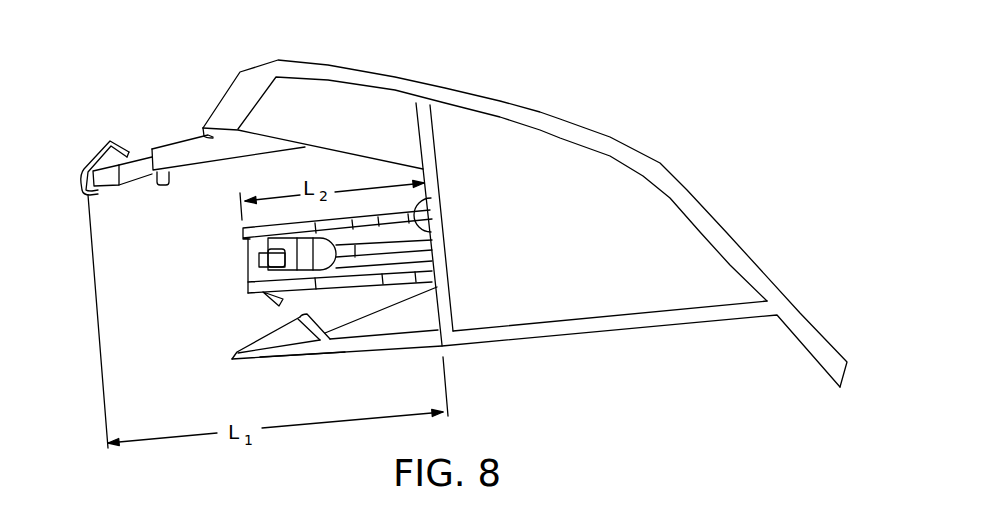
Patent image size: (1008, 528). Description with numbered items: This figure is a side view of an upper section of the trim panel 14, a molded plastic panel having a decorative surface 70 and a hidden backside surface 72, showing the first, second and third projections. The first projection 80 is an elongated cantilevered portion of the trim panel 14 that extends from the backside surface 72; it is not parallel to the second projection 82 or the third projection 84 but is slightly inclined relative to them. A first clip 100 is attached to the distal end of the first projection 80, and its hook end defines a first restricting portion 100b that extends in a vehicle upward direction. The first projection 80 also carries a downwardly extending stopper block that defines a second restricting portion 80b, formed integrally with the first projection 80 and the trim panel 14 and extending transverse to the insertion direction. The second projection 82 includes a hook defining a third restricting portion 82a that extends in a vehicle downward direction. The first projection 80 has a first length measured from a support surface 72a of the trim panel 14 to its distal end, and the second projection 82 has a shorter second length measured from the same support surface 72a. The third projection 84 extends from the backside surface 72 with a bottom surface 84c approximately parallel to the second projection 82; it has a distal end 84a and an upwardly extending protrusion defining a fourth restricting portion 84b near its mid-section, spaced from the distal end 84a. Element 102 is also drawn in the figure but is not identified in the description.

The trim panel 14 is at (540, 111).
The decorative surface 70 is at (608, 138).
The backside surface 72 is at (803, 344).
The support surface 72a is at (433, 230).
The first projection 80 is at (181, 156).
The second restricting portion 80b is at (167, 187).
The second projection 82 is at (245, 231).
The third restricting portion 82a is at (268, 302).
The third projection 84 is at (393, 322).
The distal end 84a is at (236, 352).
The fourth restricting portion 84b is at (311, 313).
The bottom surface 84c is at (303, 358).
The first clip 100 is at (95, 157).
The first restricting portion 100b is at (122, 147).
The slider block 102 is at (258, 265).